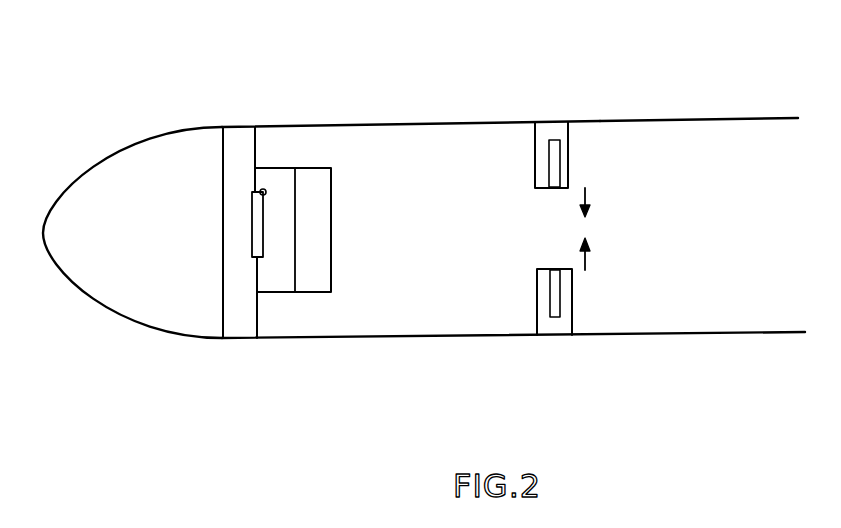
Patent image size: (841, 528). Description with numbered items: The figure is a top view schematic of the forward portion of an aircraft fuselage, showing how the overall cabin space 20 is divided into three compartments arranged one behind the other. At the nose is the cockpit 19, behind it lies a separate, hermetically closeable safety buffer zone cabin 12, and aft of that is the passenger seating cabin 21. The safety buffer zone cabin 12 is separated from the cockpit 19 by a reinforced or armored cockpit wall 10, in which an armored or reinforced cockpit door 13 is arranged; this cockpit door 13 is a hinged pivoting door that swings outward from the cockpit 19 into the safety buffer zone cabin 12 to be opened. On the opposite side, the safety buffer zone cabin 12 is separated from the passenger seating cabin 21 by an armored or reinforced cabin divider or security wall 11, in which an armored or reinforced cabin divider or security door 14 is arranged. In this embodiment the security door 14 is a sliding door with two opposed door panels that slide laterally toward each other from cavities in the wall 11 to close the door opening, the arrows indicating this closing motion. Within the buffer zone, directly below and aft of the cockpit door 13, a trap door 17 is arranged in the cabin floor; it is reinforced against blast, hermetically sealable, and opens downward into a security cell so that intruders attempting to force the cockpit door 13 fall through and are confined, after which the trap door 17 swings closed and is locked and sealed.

The cockpit wall 10 is at (243, 342).
The cabin divider or security wall 11 is at (548, 327).
The safety buffer zone cabin 12 is at (357, 137).
The cockpit door 13 is at (260, 191).
The cabin divider or security door 14 is at (555, 138).
The trap door 17 is at (280, 282).
The cockpit 19 is at (142, 155).
The overall cabin space 20 is at (493, 98).
The passenger seating cabin 21 is at (653, 140).